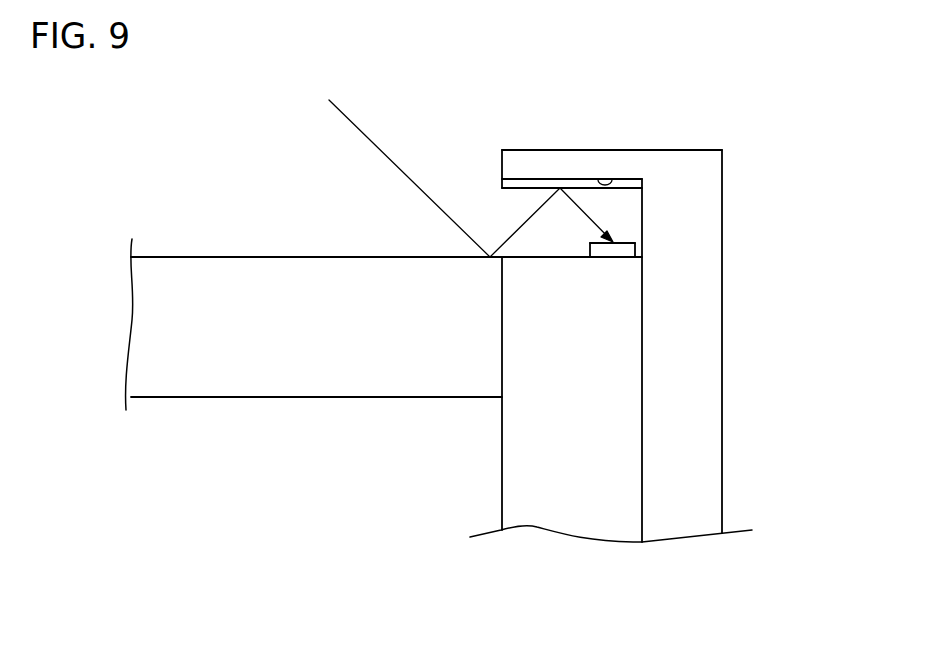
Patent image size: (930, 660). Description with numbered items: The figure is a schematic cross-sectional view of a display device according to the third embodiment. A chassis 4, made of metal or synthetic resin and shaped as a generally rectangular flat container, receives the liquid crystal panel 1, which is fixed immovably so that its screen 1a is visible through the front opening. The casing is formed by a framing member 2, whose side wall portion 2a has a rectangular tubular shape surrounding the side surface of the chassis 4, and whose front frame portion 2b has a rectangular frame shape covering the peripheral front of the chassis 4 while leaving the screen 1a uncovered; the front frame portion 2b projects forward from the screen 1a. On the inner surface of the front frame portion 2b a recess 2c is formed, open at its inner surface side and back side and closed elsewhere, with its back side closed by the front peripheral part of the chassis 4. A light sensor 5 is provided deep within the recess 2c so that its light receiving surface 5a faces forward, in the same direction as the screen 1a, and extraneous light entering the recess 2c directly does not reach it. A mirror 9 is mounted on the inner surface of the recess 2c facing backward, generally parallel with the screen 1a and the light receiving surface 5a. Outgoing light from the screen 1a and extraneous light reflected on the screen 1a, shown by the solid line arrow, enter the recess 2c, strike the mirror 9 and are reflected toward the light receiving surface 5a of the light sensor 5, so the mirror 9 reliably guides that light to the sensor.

The liquid crystal panel 1 is at (220, 281).
The screen 1a is at (292, 257).
The framing member 2 is at (729, 368).
The side wall portion 2a is at (702, 445).
The front frame portion 2b is at (548, 158).
The recess 2c is at (612, 180).
The chassis 4 is at (518, 460).
The light sensor 5 is at (613, 253).
The light receiving surface 5a is at (627, 243).
The mirror 9 is at (512, 190).